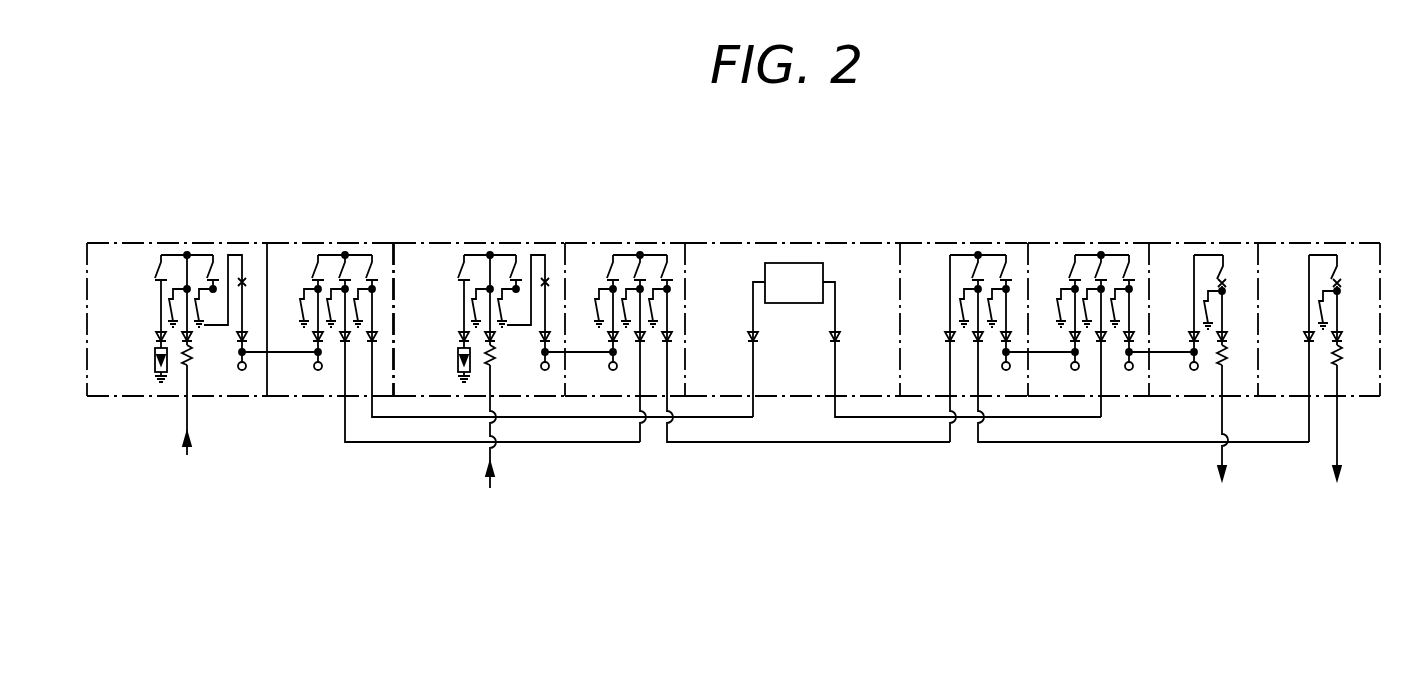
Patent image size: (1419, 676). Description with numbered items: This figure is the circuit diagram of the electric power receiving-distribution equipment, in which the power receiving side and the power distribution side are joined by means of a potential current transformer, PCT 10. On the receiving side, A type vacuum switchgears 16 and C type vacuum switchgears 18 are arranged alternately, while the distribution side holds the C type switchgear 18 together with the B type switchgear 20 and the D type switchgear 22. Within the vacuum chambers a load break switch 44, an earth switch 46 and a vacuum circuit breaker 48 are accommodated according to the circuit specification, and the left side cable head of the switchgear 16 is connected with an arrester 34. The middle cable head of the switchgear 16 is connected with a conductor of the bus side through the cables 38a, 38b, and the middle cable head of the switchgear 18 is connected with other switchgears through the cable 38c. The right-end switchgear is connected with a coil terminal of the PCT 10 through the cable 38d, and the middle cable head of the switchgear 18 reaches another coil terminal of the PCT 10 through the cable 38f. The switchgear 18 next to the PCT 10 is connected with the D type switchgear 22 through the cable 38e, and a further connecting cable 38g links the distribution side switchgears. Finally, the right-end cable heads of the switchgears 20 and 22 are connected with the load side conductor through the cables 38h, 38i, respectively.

The PCT (potential current transformer) 10 is at (795, 262).
The A type vacuum switchgear 16 is at (112, 242).
The C type vacuum switchgear 18 is at (305, 242).
The B type vacuum switchgear 20 is at (1208, 242).
The D type vacuum switchgear 22 is at (942, 242).
The arrester 34 is at (152, 372).
The cable 38a is at (192, 418).
The cable 38b is at (495, 455).
The cable 38c is at (358, 445).
The cable 38d is at (423, 422).
The cable 38e is at (805, 444).
The cable 38f is at (925, 420).
The connection line 38g is at (1162, 443).
The cable 38h is at (1228, 458).
The cable 38i is at (1341, 442).
The load break switch 44 is at (157, 268).
The earth switch 46 is at (172, 310).
The vacuum circuit breaker 48 is at (244, 272).